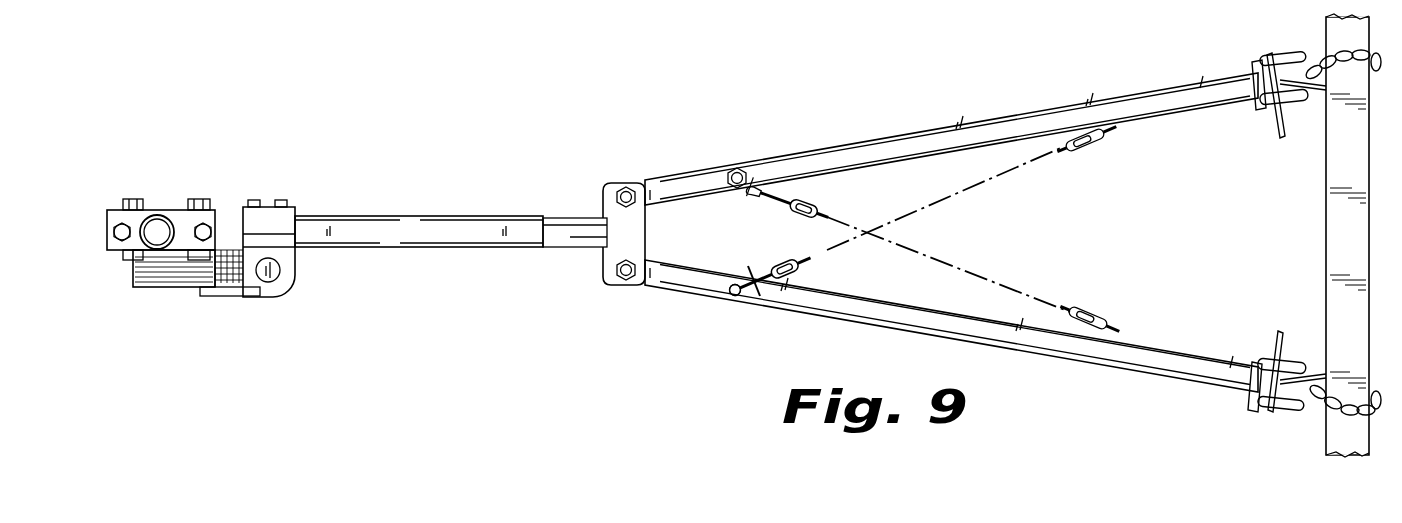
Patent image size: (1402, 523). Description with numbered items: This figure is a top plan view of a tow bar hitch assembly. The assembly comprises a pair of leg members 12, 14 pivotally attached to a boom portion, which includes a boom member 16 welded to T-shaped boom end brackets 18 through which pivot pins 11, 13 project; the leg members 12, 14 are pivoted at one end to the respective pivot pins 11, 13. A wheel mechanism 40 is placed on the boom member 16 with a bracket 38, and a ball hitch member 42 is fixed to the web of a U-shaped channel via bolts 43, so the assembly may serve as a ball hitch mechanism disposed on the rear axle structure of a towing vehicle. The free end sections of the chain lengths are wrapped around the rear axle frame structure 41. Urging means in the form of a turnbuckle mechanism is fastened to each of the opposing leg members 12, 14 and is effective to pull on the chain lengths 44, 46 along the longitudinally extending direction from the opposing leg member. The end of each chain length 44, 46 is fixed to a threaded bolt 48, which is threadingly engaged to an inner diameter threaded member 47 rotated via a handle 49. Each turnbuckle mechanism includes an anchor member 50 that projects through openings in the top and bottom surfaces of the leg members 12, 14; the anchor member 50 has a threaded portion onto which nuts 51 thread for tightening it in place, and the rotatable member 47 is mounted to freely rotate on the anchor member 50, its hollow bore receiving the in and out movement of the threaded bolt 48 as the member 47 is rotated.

The pivot pin 11 is at (632, 190).
The leg member 12 is at (960, 138).
The pivot pin 13 is at (628, 282).
The leg member 14 is at (1013, 350).
The boom member 16 is at (372, 228).
The T-shaped boom end bracket 18 is at (565, 222).
The bracket 38 is at (290, 292).
The wheel mechanism 40 is at (182, 288).
The rear axle frame structure 41 is at (1326, 205).
The ball hitch member 42 is at (160, 217).
The bolt 43 is at (210, 226).
The chain length 44 is at (1073, 152).
The chain length 46 is at (1080, 306).
The inner diameter threaded member 47 is at (757, 270).
The threaded bolt 48 is at (796, 200).
The handle 49 is at (755, 298).
The anchor member 50 is at (731, 296).
The nut 51 is at (742, 170).